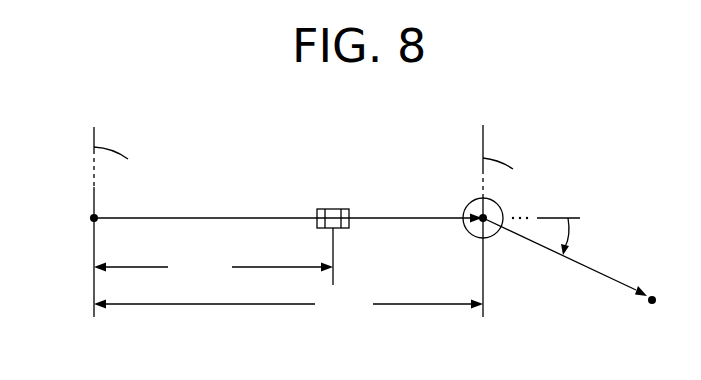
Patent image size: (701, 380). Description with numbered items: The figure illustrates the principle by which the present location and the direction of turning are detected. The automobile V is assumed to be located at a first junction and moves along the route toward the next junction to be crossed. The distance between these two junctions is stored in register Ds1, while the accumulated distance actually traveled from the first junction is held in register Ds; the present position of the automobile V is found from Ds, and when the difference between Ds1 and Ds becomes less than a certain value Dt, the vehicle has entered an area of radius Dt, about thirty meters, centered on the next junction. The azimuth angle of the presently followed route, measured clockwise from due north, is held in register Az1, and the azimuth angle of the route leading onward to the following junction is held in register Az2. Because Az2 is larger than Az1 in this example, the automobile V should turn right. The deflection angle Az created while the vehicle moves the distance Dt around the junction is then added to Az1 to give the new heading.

The automobile V is at (333, 209).
The radius Dt is at (475, 233).
The register Az1 (azimuth angle of route N(i)-N(j)) Az1 is at (159, 206).
The register Az2 (azimuth angle of route N(j)-N(k)) Az2 is at (539, 231).
The register Az (deflection angle) Az is at (580, 236).
The register Ds1 (distance between junctions N(i) and N(j)) Ds1 is at (213, 266).
The register Ds (accumulated distance traveled) Ds is at (288, 306).